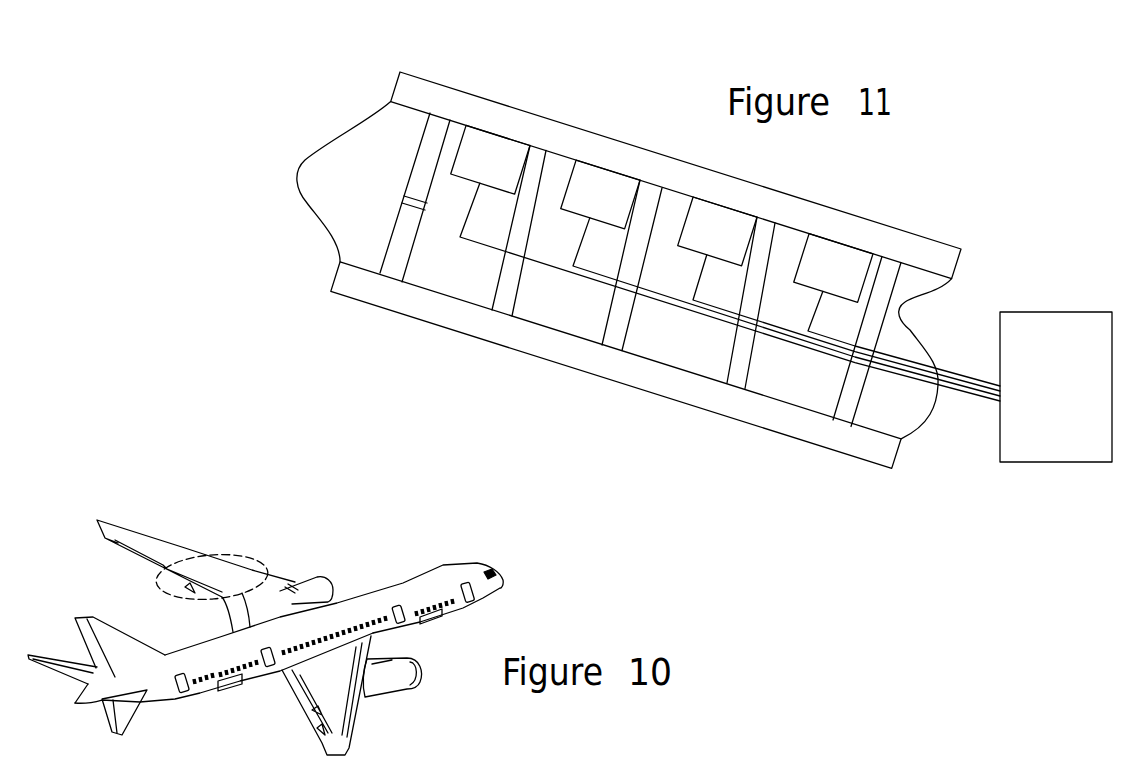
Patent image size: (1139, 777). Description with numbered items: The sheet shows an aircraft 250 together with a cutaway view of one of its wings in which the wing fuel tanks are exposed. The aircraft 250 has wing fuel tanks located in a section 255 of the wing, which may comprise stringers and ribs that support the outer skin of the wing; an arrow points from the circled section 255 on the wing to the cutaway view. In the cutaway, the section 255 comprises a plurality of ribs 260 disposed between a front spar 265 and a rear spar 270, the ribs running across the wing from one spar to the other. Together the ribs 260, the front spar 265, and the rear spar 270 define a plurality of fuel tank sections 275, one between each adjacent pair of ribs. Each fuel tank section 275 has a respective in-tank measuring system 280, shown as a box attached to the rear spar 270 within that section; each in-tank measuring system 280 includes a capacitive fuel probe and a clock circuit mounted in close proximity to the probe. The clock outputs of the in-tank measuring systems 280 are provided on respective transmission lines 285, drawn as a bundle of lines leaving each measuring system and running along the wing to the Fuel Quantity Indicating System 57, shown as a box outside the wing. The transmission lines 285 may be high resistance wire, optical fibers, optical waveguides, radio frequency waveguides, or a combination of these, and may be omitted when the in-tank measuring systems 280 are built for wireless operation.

In FIG. 10, the aircraft 250 is at (368, 572).
In FIG. 10, the section 255 is at (322, 456).
In FIG. 11, the rear spar 270 is at (417, 88).
In FIG. 11, the front spar 265 is at (403, 305).
In FIG. 11, the ribs 260 is at (395, 258).
In FIG. 11, the fuel tank sections 275 is at (478, 290).
In FIG. 11, the in-tank measuring systems 280 is at (662, 213).
In FIG. 11, the transmission lines 285 is at (961, 411).
In FIG. 11, the Fuel Quantity Indicating System 57 is at (1056, 387).